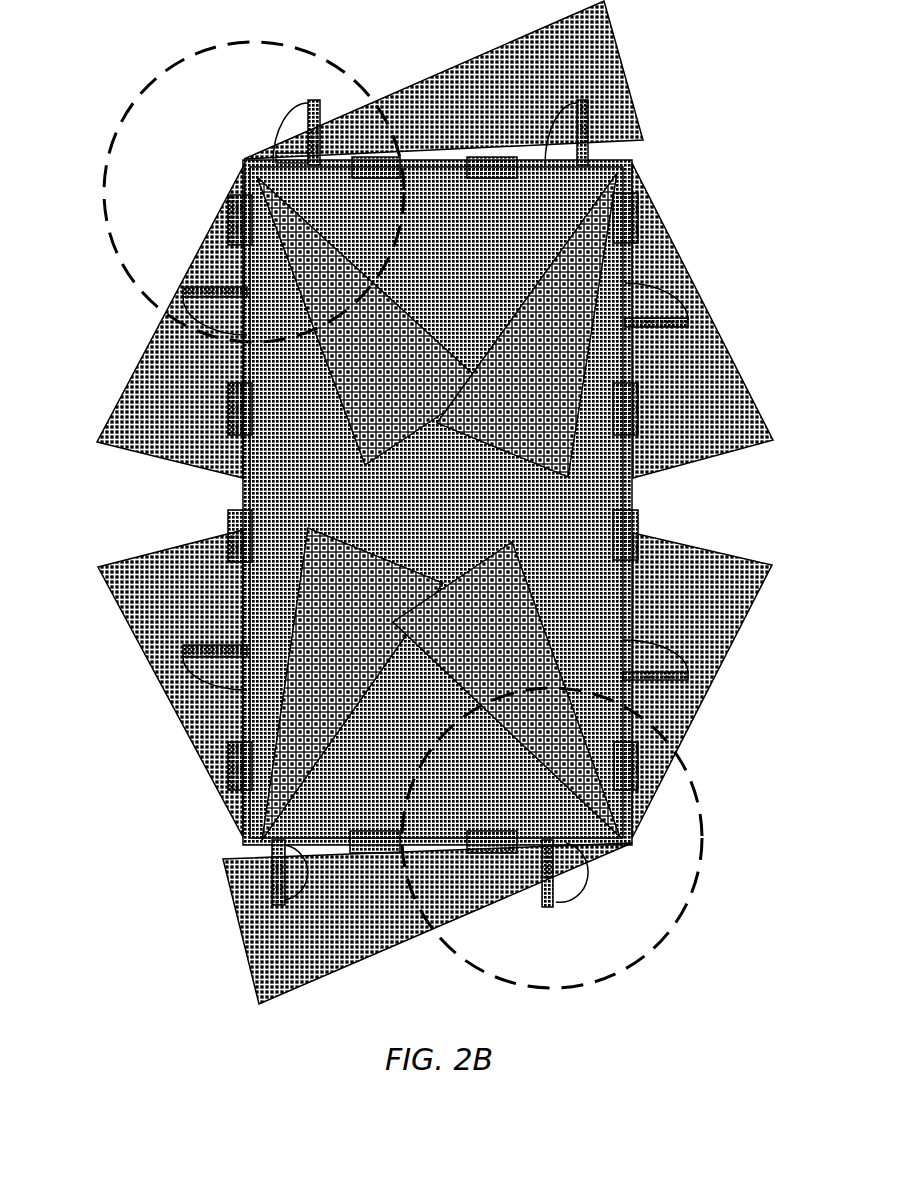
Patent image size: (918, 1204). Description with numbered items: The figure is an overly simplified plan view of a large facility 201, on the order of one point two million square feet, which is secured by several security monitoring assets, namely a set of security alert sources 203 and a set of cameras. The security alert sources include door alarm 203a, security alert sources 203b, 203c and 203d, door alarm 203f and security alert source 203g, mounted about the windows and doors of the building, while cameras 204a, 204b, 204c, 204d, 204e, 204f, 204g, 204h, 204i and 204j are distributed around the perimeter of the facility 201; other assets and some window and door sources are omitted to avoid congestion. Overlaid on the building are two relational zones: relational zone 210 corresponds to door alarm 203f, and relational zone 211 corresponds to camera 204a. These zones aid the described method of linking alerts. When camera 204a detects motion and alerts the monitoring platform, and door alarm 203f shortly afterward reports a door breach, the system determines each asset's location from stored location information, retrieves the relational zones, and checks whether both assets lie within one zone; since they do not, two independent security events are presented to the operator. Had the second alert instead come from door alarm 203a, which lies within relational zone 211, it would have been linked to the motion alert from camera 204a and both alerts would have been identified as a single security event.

The facility 201 is at (437, 502).
The security alert sources 203 is at (633, 760).
The door alarm 203a is at (305, 150).
The security alert source 203b is at (371, 191).
The security alert source 203c is at (243, 215).
The security alert source 203d is at (182, 310).
The door alarm 203f is at (567, 850).
The security alert source 203g is at (484, 819).
The camera 204a is at (443, 80).
The camera 204b is at (702, 320).
The camera 204c is at (527, 325).
The camera 204d is at (371, 321).
The camera 204e is at (171, 320).
The camera 204f is at (702, 685).
The camera 204g is at (506, 689).
The camera 204h is at (352, 684).
The camera 204i is at (170, 683).
The camera 204j is at (427, 923).
The relational zone 210 is at (630, 970).
The relational zone 211 is at (150, 78).